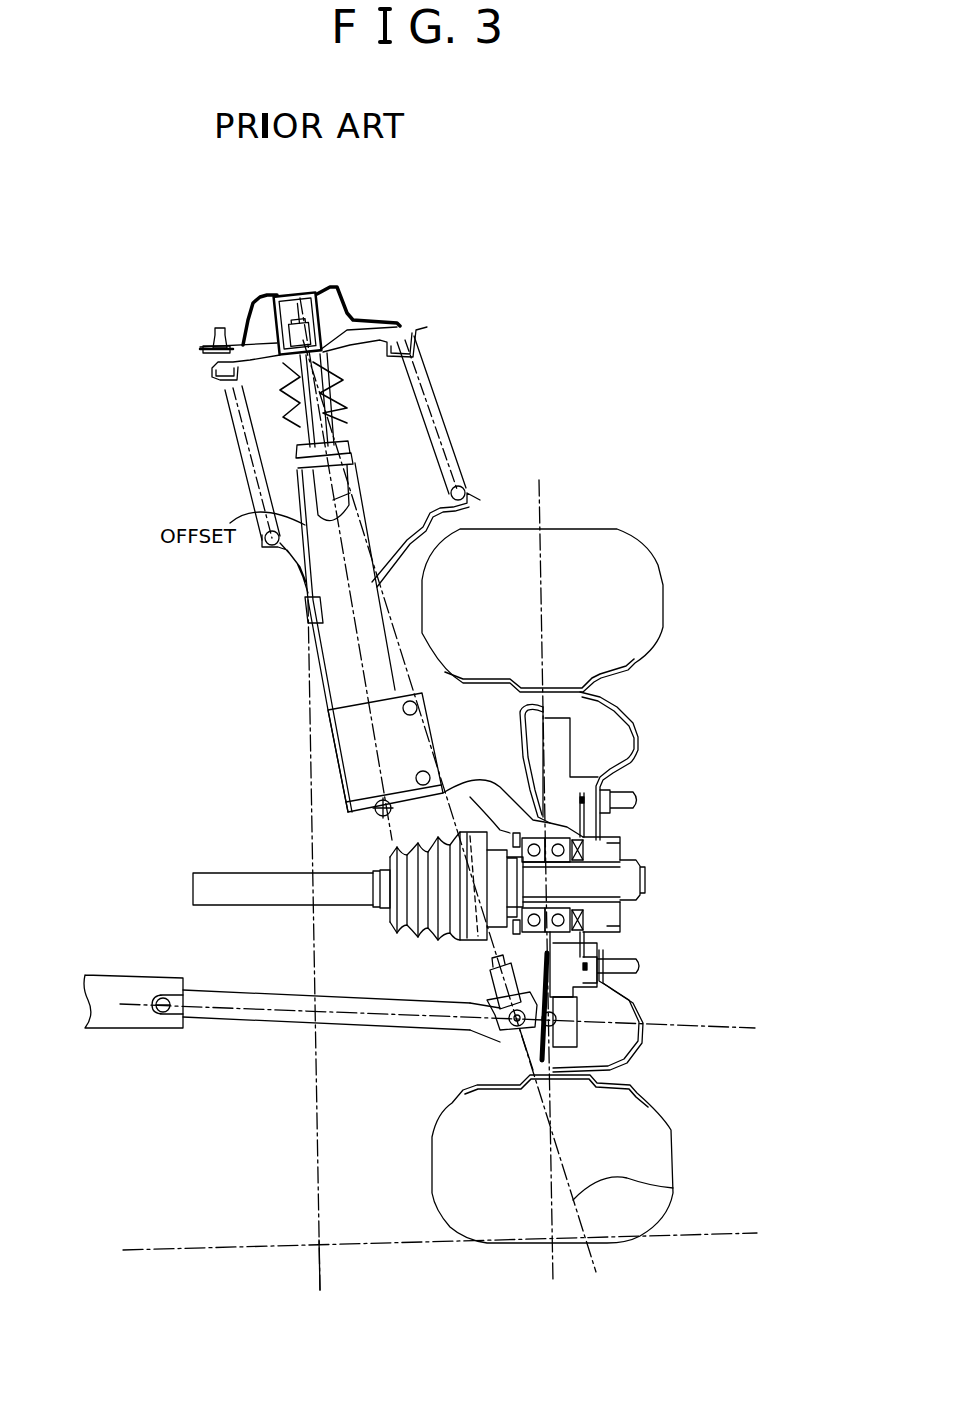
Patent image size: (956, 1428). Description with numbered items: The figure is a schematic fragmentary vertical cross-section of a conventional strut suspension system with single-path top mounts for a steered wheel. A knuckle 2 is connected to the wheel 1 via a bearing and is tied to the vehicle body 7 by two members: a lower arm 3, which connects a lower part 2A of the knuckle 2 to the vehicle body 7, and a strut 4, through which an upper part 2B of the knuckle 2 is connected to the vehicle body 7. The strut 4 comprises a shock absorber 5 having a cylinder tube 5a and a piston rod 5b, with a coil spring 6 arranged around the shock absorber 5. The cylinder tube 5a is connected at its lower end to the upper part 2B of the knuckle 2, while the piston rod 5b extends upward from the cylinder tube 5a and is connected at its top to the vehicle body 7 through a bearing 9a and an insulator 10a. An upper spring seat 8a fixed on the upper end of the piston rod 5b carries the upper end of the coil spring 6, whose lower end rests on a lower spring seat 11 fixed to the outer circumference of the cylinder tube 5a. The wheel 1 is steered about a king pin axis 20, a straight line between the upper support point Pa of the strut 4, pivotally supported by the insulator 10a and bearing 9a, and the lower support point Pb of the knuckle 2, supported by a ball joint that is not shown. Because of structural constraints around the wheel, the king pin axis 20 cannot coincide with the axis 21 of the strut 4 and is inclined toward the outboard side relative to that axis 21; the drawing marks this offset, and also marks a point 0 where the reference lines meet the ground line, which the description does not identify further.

The wheel 1 is at (684, 555).
The knuckle 2 is at (504, 772).
The lower part of the knuckle 2A is at (530, 965).
The upper part of the knuckle 2B is at (453, 760).
The lower arm 3 is at (232, 1013).
The strut 4 is at (257, 623).
The shock absorber 5 is at (320, 622).
The cylinder tube 5a is at (333, 643).
The piston rod 5b is at (328, 428).
The coil spring 6 is at (437, 420).
The vehicle body 7 is at (125, 987).
The upper spring seat 8a is at (427, 327).
The bearing 9a is at (330, 330).
The insulator 10a is at (337, 303).
The lower spring seat 11 is at (480, 500).
The king pin axis 20 is at (690, 1187).
The axis of the strut 21 is at (377, 760).
The upper support point Pa is at (290, 295).
The lower support point Pb is at (502, 1027).
The ground contact point 0 is at (328, 1265).